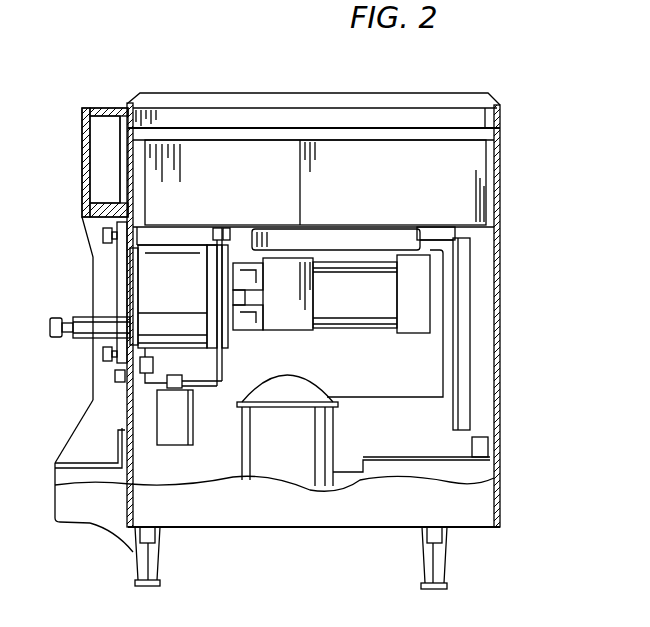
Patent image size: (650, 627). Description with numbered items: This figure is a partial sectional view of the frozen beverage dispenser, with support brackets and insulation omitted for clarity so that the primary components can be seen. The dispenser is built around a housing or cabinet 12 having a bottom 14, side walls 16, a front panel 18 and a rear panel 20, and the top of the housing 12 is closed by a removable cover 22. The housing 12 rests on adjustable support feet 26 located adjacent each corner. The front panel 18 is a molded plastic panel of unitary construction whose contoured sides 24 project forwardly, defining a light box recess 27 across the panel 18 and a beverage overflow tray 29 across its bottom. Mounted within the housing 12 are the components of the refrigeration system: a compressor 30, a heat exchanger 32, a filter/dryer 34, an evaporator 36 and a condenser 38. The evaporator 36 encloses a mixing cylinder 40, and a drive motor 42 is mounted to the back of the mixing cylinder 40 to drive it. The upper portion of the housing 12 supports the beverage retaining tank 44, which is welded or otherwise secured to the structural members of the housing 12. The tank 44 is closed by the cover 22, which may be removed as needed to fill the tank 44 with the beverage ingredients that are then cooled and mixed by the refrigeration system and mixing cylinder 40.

The housing 12 is at (69, 298).
The bottom 14 is at (377, 528).
The side walls 16 is at (255, 517).
The front panel 18 is at (125, 400).
The rear panel 20 is at (503, 150).
The removable cover 22 is at (220, 95).
The contoured sides 24 is at (95, 252).
The adjustable support feet 26 is at (435, 562).
The light box recess 27 is at (102, 147).
The beverage overflow tray 29 is at (88, 457).
The compressor 30 is at (303, 473).
The heat exchanger 32 is at (368, 240).
The filter/dryer 34 is at (178, 437).
The evaporator 36 is at (147, 285).
The condenser 38 is at (478, 357).
The mixing cylinder 40 is at (228, 333).
The drive motor 42 is at (365, 320).
The beverage retaining tank 44 is at (275, 148).